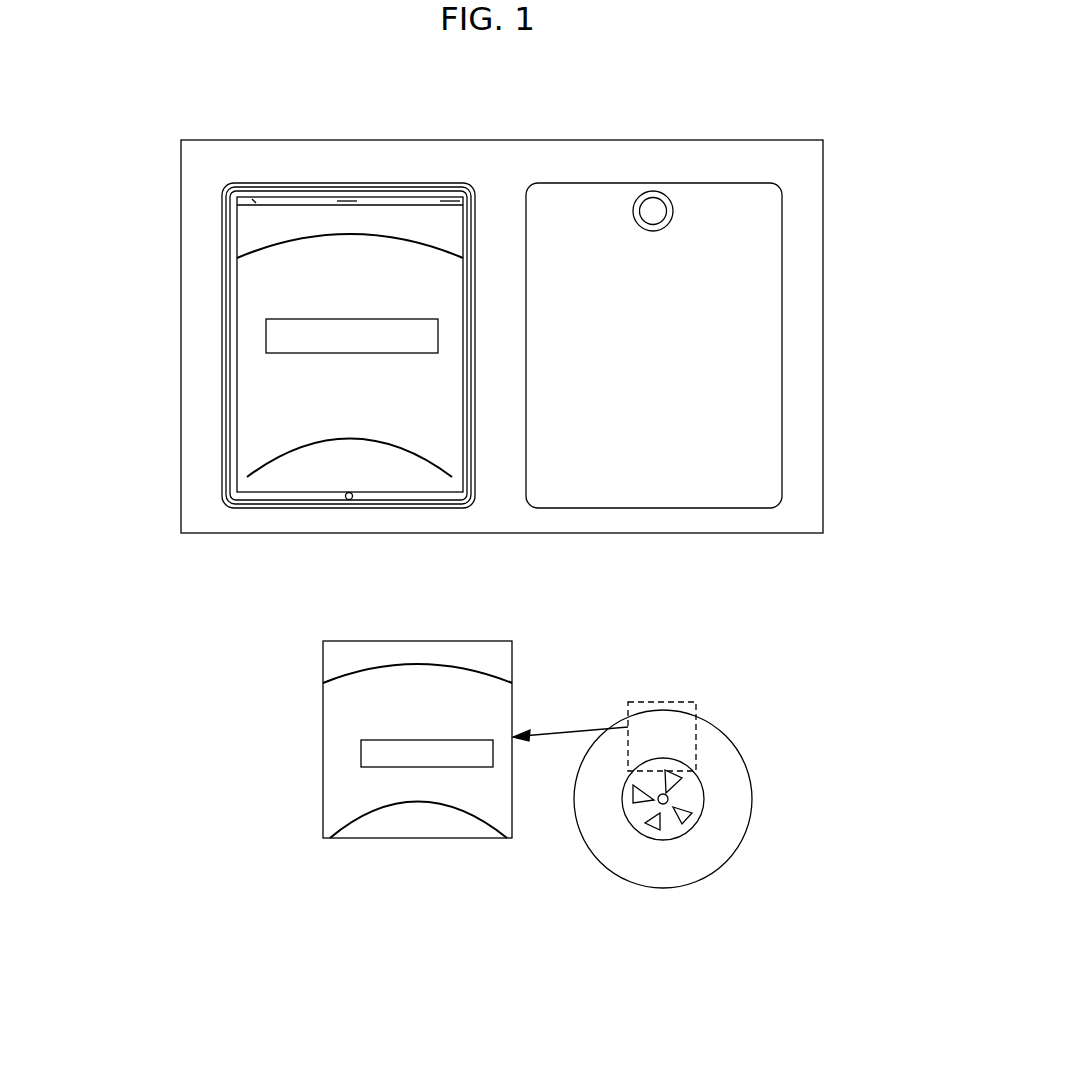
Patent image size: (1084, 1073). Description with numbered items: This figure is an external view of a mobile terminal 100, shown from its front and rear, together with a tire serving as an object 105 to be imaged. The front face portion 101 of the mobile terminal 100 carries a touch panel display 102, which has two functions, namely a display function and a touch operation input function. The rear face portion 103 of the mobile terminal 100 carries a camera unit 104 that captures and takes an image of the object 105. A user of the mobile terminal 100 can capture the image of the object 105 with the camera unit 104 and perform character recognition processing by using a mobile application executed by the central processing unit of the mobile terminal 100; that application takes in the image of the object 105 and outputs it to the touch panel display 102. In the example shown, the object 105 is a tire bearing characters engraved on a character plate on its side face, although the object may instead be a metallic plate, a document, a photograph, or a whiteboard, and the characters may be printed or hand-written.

The mobile terminal 100 is at (222, 140).
The front face portion 101 is at (222, 220).
The touch panel display 102 is at (247, 327).
The rear face portion 103 is at (565, 183).
The camera unit 104 is at (652, 191).
The object 105 is at (411, 640).